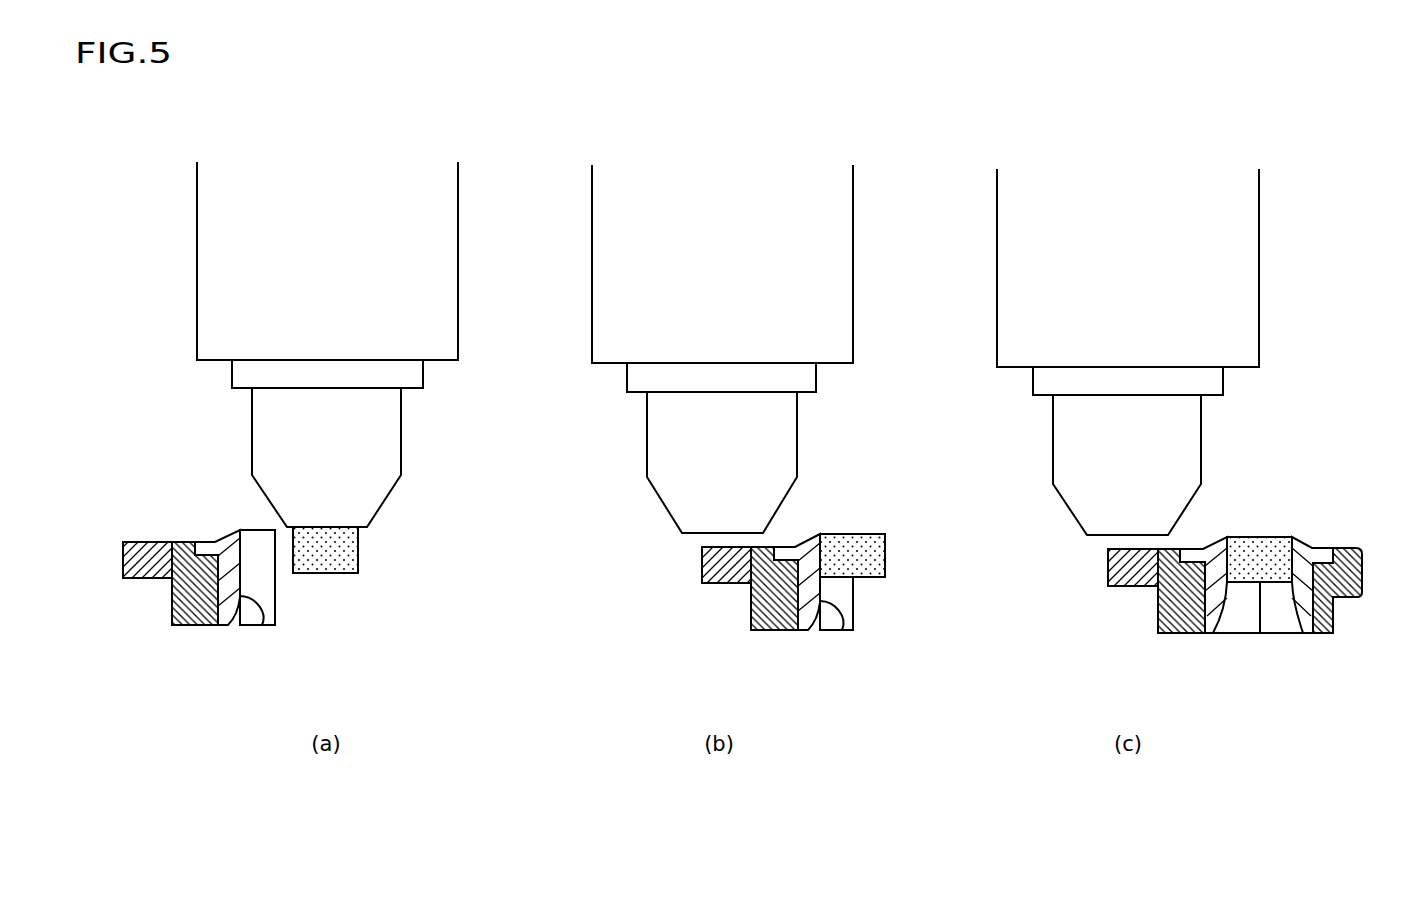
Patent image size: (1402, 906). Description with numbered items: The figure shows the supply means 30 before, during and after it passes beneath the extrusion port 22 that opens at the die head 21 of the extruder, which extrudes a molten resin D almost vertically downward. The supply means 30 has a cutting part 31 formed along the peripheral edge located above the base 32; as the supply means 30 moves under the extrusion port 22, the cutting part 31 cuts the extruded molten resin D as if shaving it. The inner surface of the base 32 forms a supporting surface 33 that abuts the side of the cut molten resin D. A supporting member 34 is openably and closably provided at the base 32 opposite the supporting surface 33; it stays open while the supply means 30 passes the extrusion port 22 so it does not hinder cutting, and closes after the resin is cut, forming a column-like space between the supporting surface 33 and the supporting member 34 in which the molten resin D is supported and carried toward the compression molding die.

The die head 21 is at (223, 327).
The extrusion port 22 is at (361, 531).
The supply means 30 is at (133, 615).
The cutting part 31 is at (240, 529).
The base 32 is at (186, 602).
The supporting surface 33 is at (257, 627).
The supporting member 34 is at (1348, 600).
The molten resin D is at (885, 558).